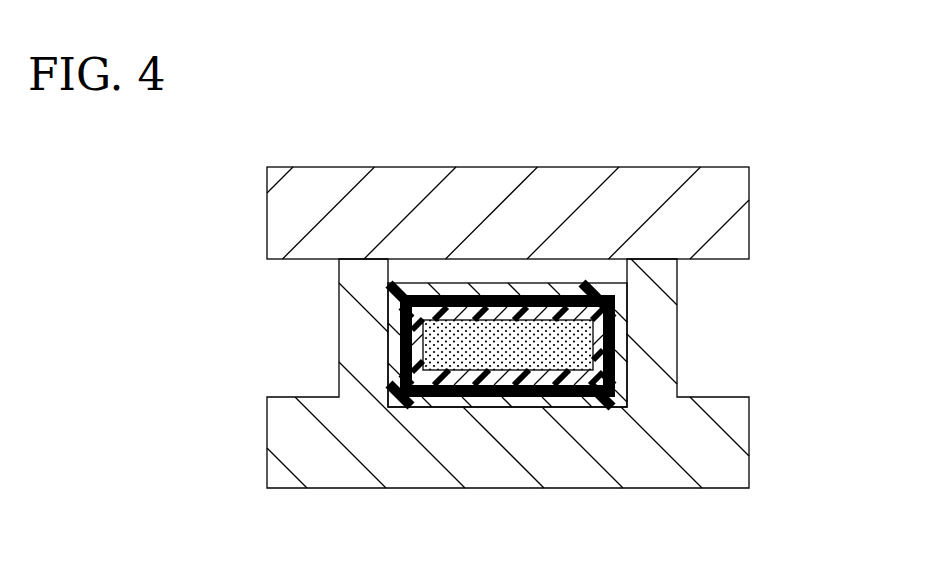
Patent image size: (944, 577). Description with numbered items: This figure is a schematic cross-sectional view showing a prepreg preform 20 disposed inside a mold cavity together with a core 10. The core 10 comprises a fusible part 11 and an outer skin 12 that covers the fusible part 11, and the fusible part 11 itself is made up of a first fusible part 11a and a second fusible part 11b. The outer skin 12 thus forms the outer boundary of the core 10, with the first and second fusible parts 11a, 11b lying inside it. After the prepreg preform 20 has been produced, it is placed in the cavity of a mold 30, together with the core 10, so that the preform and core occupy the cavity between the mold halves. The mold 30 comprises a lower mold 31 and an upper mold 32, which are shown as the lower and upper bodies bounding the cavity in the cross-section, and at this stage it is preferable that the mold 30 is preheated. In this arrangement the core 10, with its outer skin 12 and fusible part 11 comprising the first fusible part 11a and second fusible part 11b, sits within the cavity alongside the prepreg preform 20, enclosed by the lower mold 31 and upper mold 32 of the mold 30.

The core 10 is at (624, 314).
The fusible part 11 is at (633, 340).
The first fusible part 11a is at (598, 321).
The second fusible part 11b is at (597, 357).
The outer skin 12 is at (580, 395).
The prepreg preform 20 is at (470, 400).
The mold 30 is at (418, 327).
The lower mold 31 is at (292, 436).
The upper mold 32 is at (292, 215).